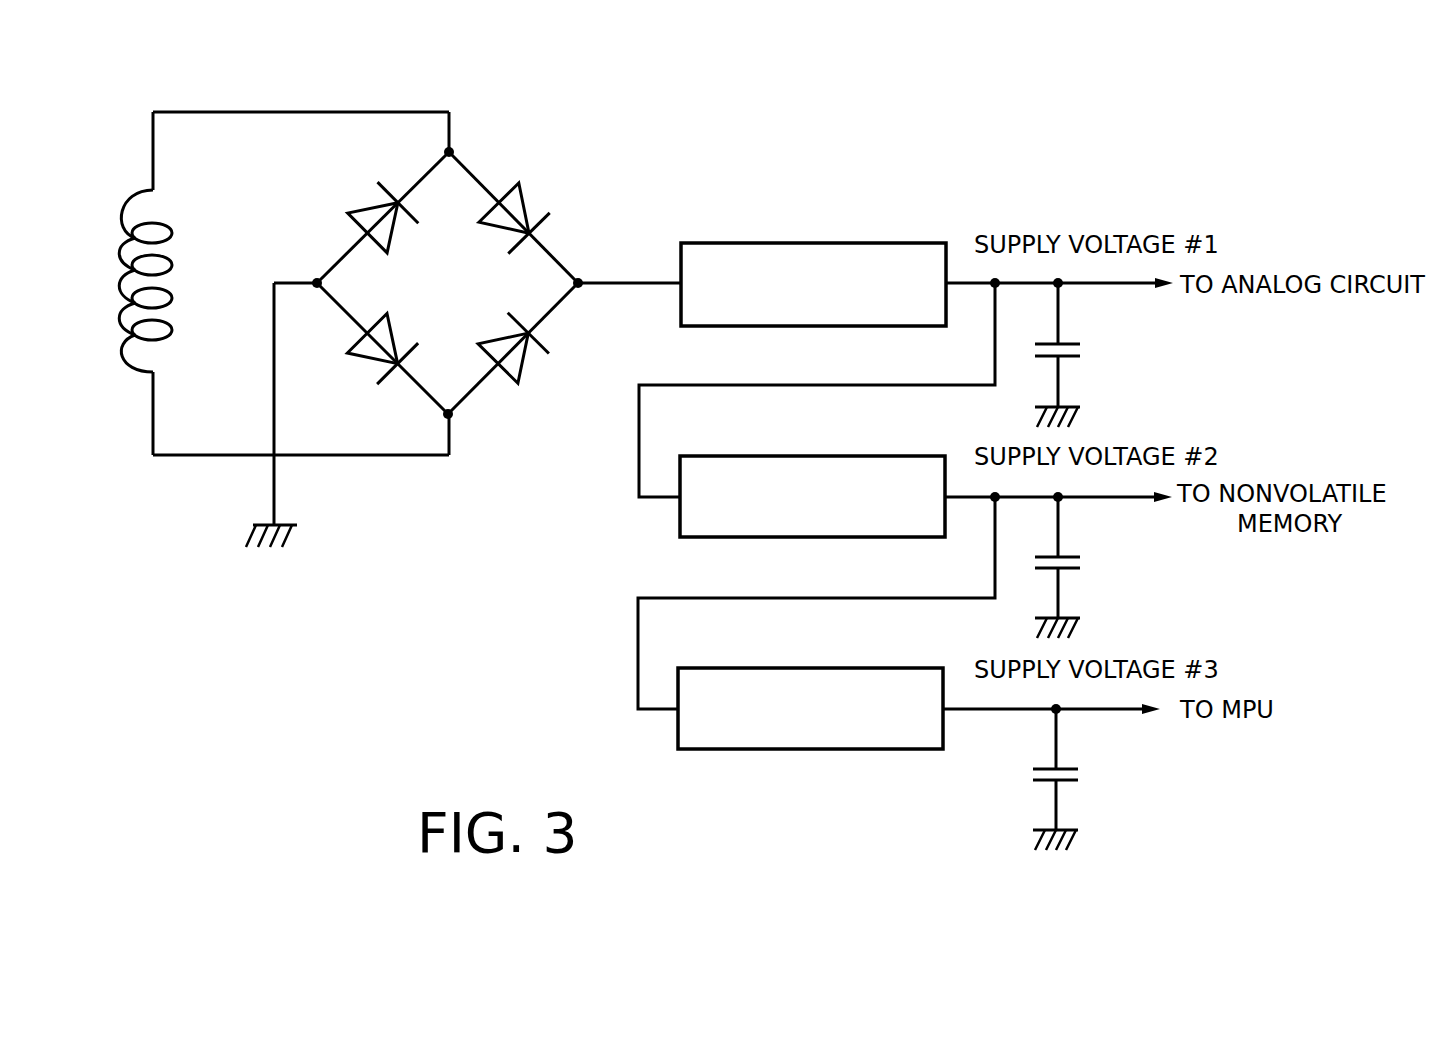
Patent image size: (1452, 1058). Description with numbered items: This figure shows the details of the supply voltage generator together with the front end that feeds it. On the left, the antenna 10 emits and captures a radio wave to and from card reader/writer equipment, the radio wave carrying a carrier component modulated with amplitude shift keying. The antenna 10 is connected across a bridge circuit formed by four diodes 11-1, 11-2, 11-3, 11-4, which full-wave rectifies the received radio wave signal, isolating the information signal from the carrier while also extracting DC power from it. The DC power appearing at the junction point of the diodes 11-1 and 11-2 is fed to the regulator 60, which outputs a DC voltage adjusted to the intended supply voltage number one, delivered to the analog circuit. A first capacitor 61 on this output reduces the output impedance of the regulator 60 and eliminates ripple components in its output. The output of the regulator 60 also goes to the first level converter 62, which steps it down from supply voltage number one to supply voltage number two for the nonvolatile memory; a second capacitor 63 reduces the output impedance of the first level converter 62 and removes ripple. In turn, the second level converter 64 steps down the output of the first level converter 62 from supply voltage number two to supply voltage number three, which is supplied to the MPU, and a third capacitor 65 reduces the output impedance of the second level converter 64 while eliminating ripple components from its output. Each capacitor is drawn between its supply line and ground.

The antenna 10 is at (163, 202).
The diode 11-1 is at (500, 172).
The diode 11-2 is at (498, 395).
The diode 11-3 is at (397, 395).
The diode 11-4 is at (398, 172).
The regulator 60 is at (753, 242).
The first capacitor 61 is at (1077, 336).
The first level converter 62 is at (753, 455).
The second capacitor 63 is at (1077, 548).
The second level converter 64 is at (750, 667).
The third capacitor 65 is at (1075, 760).